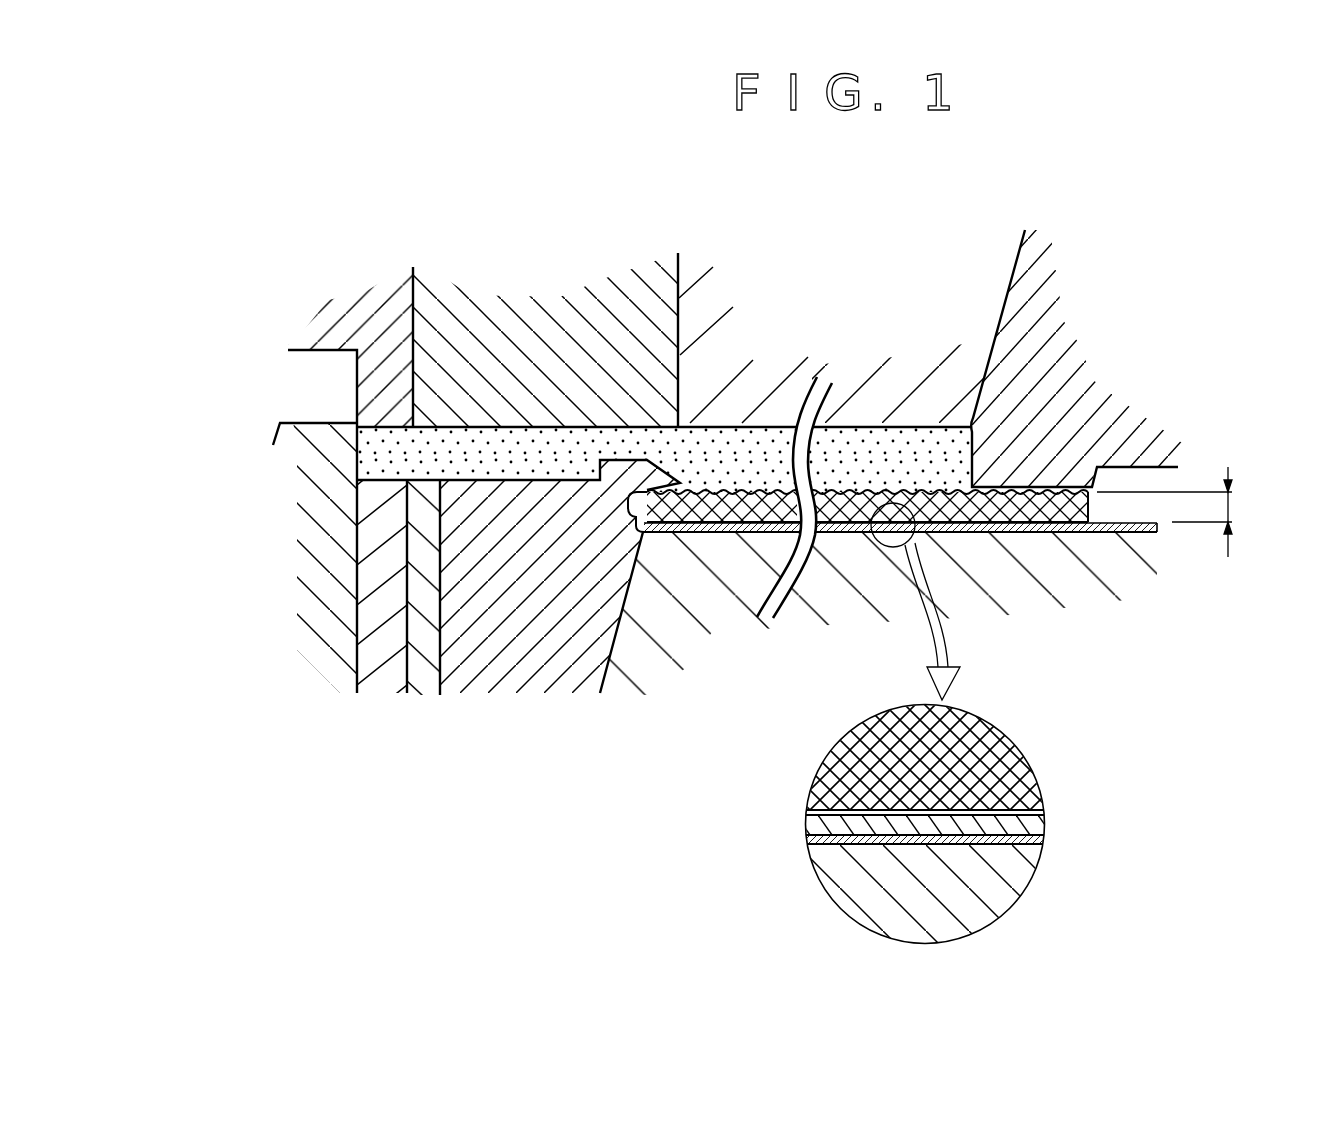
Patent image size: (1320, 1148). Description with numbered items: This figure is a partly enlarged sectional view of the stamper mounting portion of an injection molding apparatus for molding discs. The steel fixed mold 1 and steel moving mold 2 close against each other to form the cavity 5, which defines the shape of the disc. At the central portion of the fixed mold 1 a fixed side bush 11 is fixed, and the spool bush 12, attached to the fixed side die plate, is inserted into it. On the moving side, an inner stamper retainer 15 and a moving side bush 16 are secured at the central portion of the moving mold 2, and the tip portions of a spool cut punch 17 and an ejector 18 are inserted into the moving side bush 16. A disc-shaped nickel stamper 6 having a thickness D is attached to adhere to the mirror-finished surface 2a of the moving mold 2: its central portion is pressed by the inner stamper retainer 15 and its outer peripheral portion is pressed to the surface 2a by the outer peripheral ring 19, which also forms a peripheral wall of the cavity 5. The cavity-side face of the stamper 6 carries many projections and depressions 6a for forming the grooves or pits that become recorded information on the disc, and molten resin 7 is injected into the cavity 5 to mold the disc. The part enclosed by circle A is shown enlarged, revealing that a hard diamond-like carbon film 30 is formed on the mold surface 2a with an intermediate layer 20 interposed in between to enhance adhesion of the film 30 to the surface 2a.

The fixed mold 1 is at (840, 303).
The moving mold 2 is at (825, 657).
The surface of the moving mold 2a is at (1115, 532).
The cavity 5 is at (828, 476).
The stamper 6 is at (733, 533).
The projections and depressions 6a is at (873, 492).
The molten resin 7 is at (750, 447).
The fixed side bush 11 is at (558, 313).
The spool bush 12 is at (387, 317).
The inner stamper retainer 15 is at (550, 650).
The moving side bush 16 is at (422, 680).
The spool cut punch 17 is at (387, 677).
The ejector 18 is at (327, 657).
The outer peripheral ring 19 is at (1077, 407).
The intermediate layer 20 is at (1047, 841).
The diamond-like carbon film 30 is at (977, 533).
The circle A is at (902, 552).
The thickness of the stamper D is at (1179, 512).